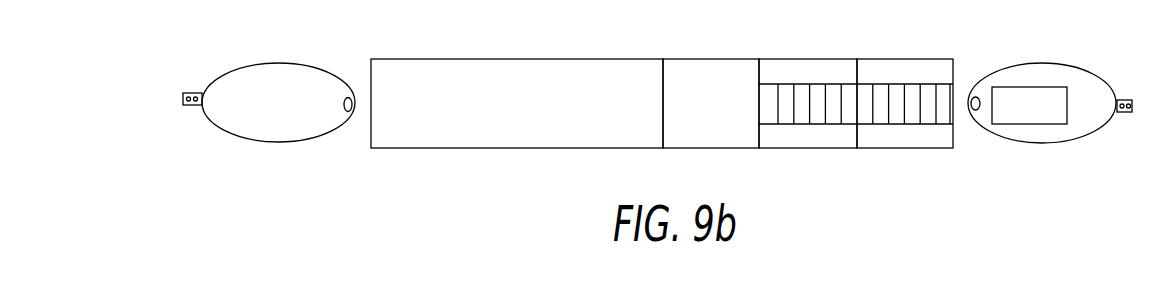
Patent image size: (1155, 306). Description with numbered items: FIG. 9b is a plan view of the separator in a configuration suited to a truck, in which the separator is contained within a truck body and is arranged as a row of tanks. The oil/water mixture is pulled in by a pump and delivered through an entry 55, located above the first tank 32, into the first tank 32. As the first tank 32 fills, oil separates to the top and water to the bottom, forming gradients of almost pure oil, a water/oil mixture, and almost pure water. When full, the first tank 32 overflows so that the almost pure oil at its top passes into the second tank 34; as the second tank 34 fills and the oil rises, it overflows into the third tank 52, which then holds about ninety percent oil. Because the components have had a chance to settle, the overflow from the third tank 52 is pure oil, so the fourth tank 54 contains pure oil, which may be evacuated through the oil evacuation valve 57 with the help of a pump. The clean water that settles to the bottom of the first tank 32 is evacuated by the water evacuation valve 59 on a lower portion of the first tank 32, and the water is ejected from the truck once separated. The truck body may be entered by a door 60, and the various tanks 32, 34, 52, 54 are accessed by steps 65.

The first tank 32 is at (446, 73).
The second tank 34 is at (717, 77).
The third tank 52 is at (821, 74).
The fourth tank 54 is at (914, 73).
The entry 55 is at (182, 93).
The oil evacuation valve 57 is at (978, 97).
The water evacuation valve 59 is at (343, 108).
The door 60 is at (1050, 100).
The steps 65 is at (851, 121).